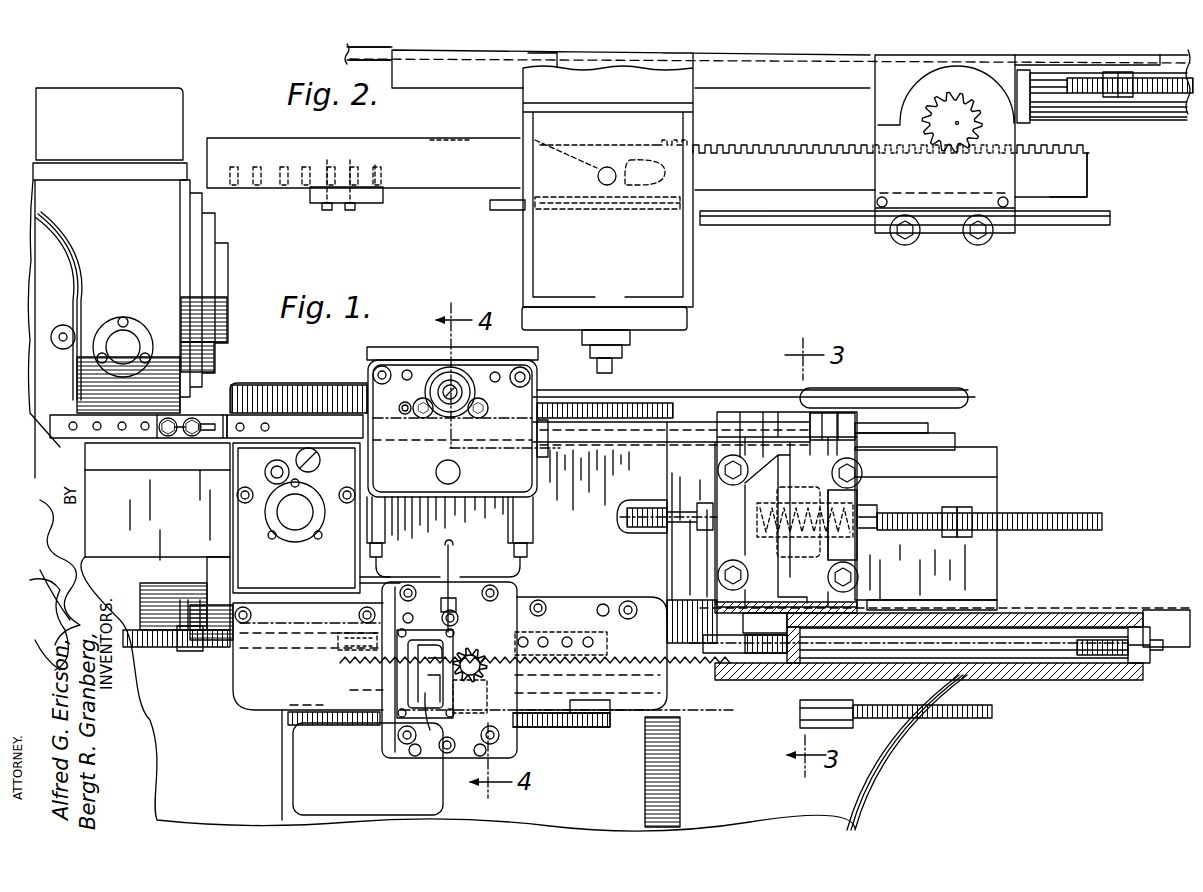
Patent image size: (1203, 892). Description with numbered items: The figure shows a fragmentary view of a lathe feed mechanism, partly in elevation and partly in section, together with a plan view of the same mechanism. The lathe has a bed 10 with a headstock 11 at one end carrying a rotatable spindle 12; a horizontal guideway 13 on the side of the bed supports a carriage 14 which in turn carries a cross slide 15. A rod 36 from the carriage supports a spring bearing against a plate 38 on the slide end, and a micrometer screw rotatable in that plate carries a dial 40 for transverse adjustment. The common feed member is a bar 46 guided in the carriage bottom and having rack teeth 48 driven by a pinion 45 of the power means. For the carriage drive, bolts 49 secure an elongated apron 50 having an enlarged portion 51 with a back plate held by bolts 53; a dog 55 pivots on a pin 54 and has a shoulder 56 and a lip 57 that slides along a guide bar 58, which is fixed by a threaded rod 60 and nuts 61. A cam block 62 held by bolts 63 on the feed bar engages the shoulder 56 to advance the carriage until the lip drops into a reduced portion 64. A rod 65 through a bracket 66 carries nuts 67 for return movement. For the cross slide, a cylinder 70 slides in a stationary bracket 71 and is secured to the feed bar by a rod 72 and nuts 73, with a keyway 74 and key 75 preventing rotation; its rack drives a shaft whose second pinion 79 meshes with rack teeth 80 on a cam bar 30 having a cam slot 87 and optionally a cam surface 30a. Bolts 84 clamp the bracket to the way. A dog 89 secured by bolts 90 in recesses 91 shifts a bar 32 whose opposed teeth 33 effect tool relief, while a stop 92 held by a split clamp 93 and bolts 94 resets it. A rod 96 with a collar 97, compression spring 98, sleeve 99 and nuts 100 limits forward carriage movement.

In FIG. 2, the bed 10 is at (344, 51).
In FIG. 1, the bed 10 is at (902, 750).
In FIG. 1, the headstock 11 is at (130, 231).
In FIG. 1, the spindle 12 is at (225, 257).
In FIG. 1, the horizontal guideway 13 is at (982, 568).
In FIG. 1, the carriage 14 is at (482, 542).
In FIG. 2, the cross slide 15 is at (698, 263).
In FIG. 1, the cross slide 15 is at (398, 346).
In FIG. 2, the cam bar 30 is at (790, 192).
In FIG. 2, the cam surface 30a is at (452, 140).
In FIG. 2, the bar 32 is at (507, 212).
In FIG. 2, the opposed teeth 33 is at (549, 205).
In FIG. 1, the rod 36 is at (461, 472).
In FIG. 1, the plate 38 is at (492, 497).
In FIG. 2, the dial 40 is at (628, 346).
In FIG. 1, the dial 40 is at (462, 388).
In FIG. 1, the pinion 45 is at (517, 675).
In FIG. 1, the bar 46 is at (691, 654).
In FIG. 1, the rack teeth 48 is at (637, 666).
In FIG. 1, the bolts 49 is at (538, 600).
In FIG. 1, the elongated apron 50 is at (243, 692).
In FIG. 1, the enlarged portion 51 is at (404, 763).
In FIG. 1, the bolts 53 is at (499, 738).
In FIG. 1, the pin 54 is at (477, 683).
In FIG. 1, the dog 55 is at (438, 670).
In FIG. 1, the shoulder 56 is at (438, 642).
In FIG. 1, the lip 57 is at (430, 730).
In FIG. 1, the guide bar 58 is at (598, 728).
In FIG. 1, the threaded rod 60 is at (968, 719).
In FIG. 1, the nuts 61 is at (858, 729).
In FIG. 1, the cam block 62 is at (609, 645).
In FIG. 1, the bolts 63 is at (563, 620).
In FIG. 1, the reduced portion 64 is at (323, 712).
In FIG. 1, the rod 65 is at (148, 648).
In FIG. 1, the bracket 66 is at (218, 557).
In FIG. 1, the nuts 67 is at (186, 600).
In FIG. 1, the cylinder 70 is at (1088, 627).
In FIG. 1, the stationary bracket 71 is at (846, 551).
In FIG. 1, the rod 72 is at (1057, 652).
In FIG. 1, the nuts 73 is at (1154, 697).
In FIG. 1, the keyway 74 is at (1010, 668).
In FIG. 1, the key 75 is at (782, 655).
In FIG. 2, the second pinion 79 is at (938, 104).
In FIG. 2, the rack teeth 80 is at (1073, 143).
In FIG. 1, the bolts 84 is at (860, 471).
In FIG. 2, the cam slot 87 is at (668, 172).
In FIG. 2, the dog 89 is at (370, 204).
In FIG. 2, the bolts 90 is at (331, 211).
In FIG. 2, the recesses 91 is at (380, 165).
In FIG. 2, the stop 92 is at (850, 226).
In FIG. 2, the split clamp 93 is at (914, 244).
In FIG. 1, the split clamp 93 is at (852, 432).
In FIG. 2, the bolts 94 is at (982, 245).
In FIG. 1, the bolts 94 is at (826, 418).
In FIG. 2, the rod 96 is at (1167, 93).
In FIG. 1, the rod 96 is at (923, 496).
In FIG. 1, the collar 97 is at (697, 531).
In FIG. 1, the compression spring 98 is at (815, 547).
In FIG. 1, the sleeve 99 is at (880, 492).
In FIG. 2, the nuts 100 is at (1125, 97).
In FIG. 1, the nuts 100 is at (962, 507).